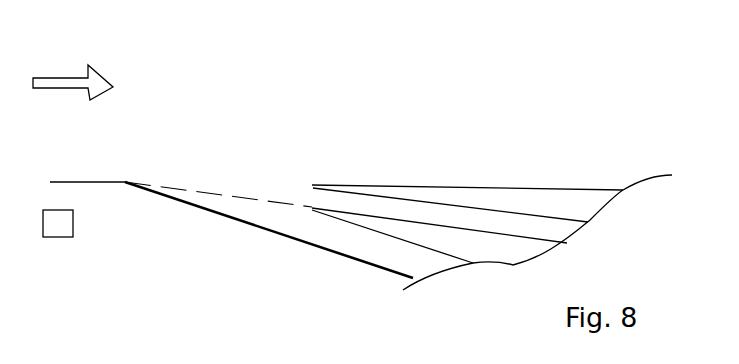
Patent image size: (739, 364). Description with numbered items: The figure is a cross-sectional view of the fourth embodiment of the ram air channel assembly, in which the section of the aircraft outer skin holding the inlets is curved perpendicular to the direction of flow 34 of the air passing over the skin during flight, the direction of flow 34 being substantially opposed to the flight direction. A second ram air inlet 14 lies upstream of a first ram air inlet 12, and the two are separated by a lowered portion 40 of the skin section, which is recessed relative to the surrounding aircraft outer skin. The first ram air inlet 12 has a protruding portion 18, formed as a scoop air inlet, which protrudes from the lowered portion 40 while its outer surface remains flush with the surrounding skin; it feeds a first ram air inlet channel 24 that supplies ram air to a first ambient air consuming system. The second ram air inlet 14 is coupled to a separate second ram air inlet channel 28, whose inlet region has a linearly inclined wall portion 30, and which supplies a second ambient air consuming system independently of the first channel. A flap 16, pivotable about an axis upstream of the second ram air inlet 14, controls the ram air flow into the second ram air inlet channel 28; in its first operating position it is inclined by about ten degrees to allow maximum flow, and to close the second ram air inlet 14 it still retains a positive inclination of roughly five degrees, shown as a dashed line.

The linearly inclined wall portion 30 is at (353, 82).
The direction of flow 34 is at (65, 79).
The protruding portion 18 is at (58, 227).
The first ram air inlet 12 is at (126, 184).
The flap 16 is at (193, 203).
The second ram air inlet 14 is at (252, 208).
The lowered portion 40 is at (313, 208).
The first ram air inlet channel 24 is at (458, 215).
The second ram air inlet channel 28 is at (360, 242).